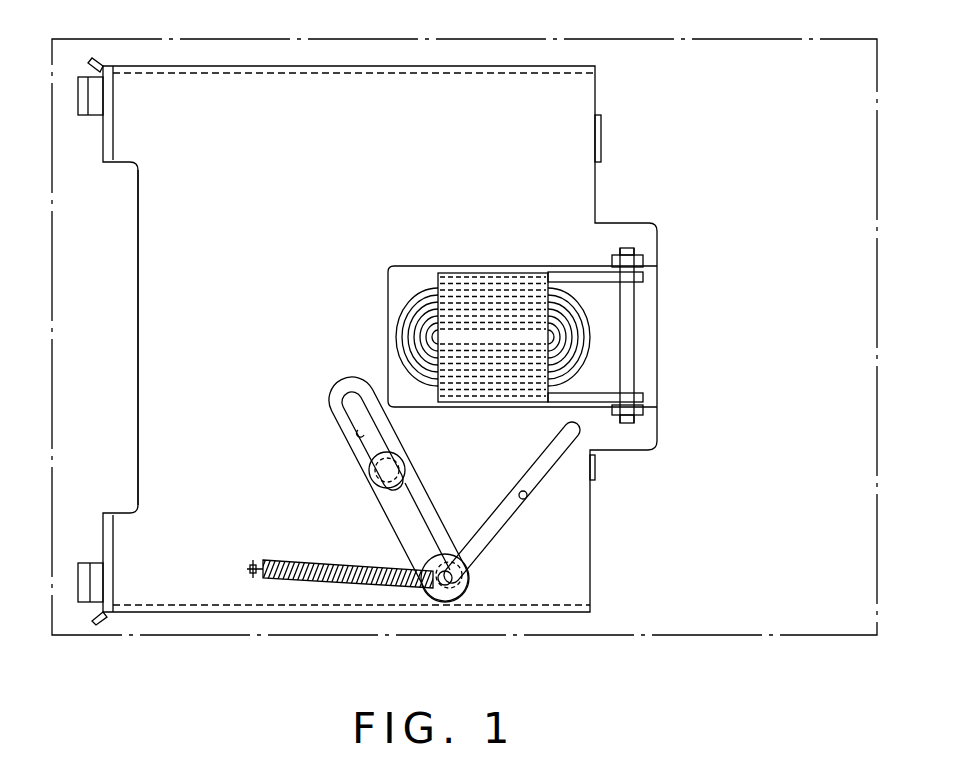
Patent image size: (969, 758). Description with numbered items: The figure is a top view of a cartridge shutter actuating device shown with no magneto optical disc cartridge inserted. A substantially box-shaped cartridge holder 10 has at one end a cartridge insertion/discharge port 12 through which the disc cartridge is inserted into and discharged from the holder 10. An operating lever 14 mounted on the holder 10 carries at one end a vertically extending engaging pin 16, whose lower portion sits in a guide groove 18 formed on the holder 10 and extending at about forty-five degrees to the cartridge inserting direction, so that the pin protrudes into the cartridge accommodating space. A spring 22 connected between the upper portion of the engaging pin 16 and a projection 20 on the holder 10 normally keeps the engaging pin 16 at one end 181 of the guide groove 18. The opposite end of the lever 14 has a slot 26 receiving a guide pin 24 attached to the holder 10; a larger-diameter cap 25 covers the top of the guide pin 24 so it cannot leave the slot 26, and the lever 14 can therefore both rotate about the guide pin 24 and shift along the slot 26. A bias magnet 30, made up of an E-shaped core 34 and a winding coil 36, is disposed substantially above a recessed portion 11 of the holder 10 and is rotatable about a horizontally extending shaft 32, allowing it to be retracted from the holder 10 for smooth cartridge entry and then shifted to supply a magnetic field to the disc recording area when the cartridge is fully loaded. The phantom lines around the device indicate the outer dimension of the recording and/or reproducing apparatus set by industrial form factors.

The cartridge holder 10 is at (608, 214).
The recessed portion 11 is at (389, 298).
The cartridge insertion/discharge port 12 is at (135, 329).
The operating lever 14 is at (367, 489).
The engaging pin 16 is at (470, 573).
The guide groove 18 is at (586, 517).
The one end of the guide groove 181 is at (473, 585).
The projection 20 is at (252, 559).
The spring 22 is at (329, 564).
The guide pin 24 is at (412, 461).
The cap 25 is at (368, 469).
The slot 26 is at (360, 433).
The bias magnet 30 is at (520, 292).
The shaft 32 is at (627, 337).
The E-shaped core 34 is at (466, 268).
The winding coil 36 is at (415, 267).